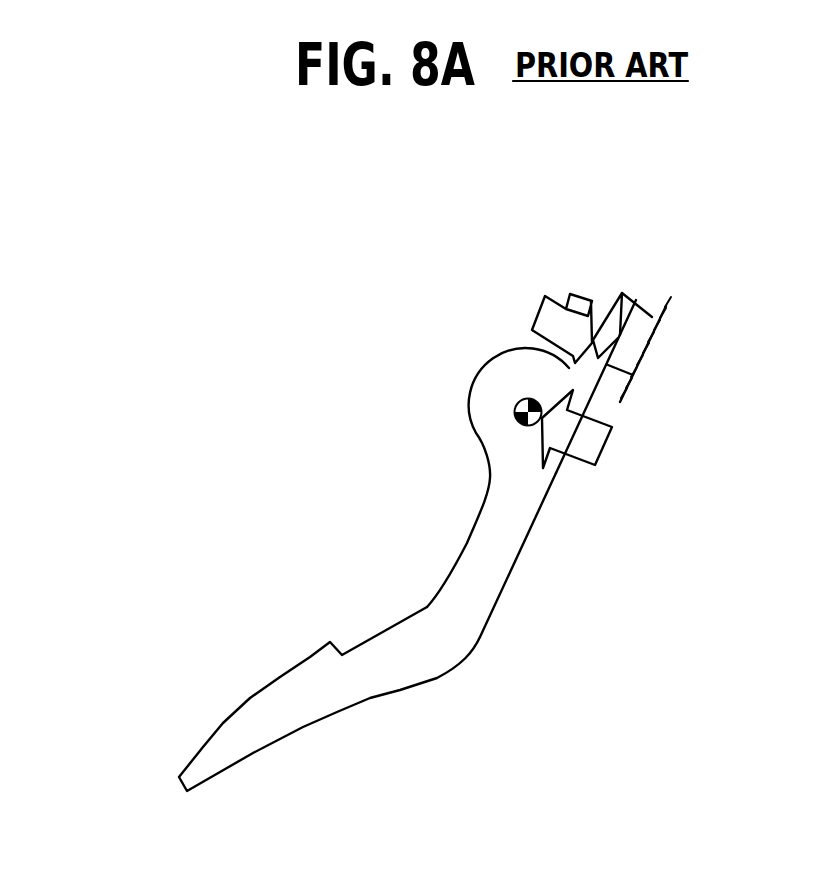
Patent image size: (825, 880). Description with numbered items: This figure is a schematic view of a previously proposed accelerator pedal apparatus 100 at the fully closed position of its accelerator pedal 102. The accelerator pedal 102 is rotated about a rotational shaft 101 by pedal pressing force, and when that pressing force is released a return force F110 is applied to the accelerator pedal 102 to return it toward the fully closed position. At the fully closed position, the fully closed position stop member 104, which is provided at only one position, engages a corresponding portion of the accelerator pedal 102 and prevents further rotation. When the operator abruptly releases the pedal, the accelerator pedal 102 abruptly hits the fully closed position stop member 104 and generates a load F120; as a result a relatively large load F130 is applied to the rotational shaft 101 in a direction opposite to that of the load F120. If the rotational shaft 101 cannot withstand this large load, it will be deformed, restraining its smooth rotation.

The accelerator pedal apparatus 100 is at (682, 245).
The rotational shaft 101 is at (525, 408).
The accelerator pedal 102 is at (433, 653).
The fully closed position stop member 104 is at (633, 349).
The return force F110 is at (547, 318).
The load F120 is at (575, 293).
The load F130 is at (590, 447).